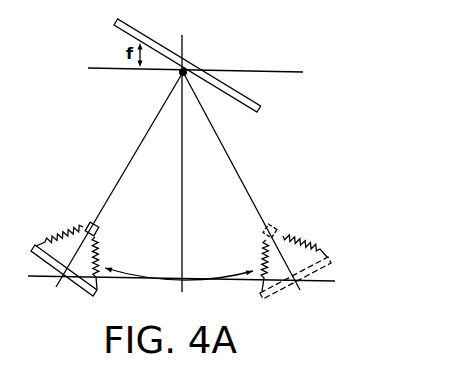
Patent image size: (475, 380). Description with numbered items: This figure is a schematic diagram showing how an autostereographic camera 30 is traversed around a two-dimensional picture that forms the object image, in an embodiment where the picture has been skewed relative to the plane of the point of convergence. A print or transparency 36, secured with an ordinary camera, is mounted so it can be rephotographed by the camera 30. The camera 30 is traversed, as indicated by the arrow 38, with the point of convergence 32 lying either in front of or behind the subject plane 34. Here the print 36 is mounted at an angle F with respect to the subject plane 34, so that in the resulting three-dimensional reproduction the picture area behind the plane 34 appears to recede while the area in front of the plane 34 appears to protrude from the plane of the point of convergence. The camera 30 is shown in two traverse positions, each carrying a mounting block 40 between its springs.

The autostereographic camera 30 is at (66, 238).
The point of convergence 32 is at (186, 70).
The subject plane 34 is at (261, 72).
The print or transparency 36 is at (257, 114).
The arrow 38 is at (203, 278).
The mounting block 40 is at (99, 228).